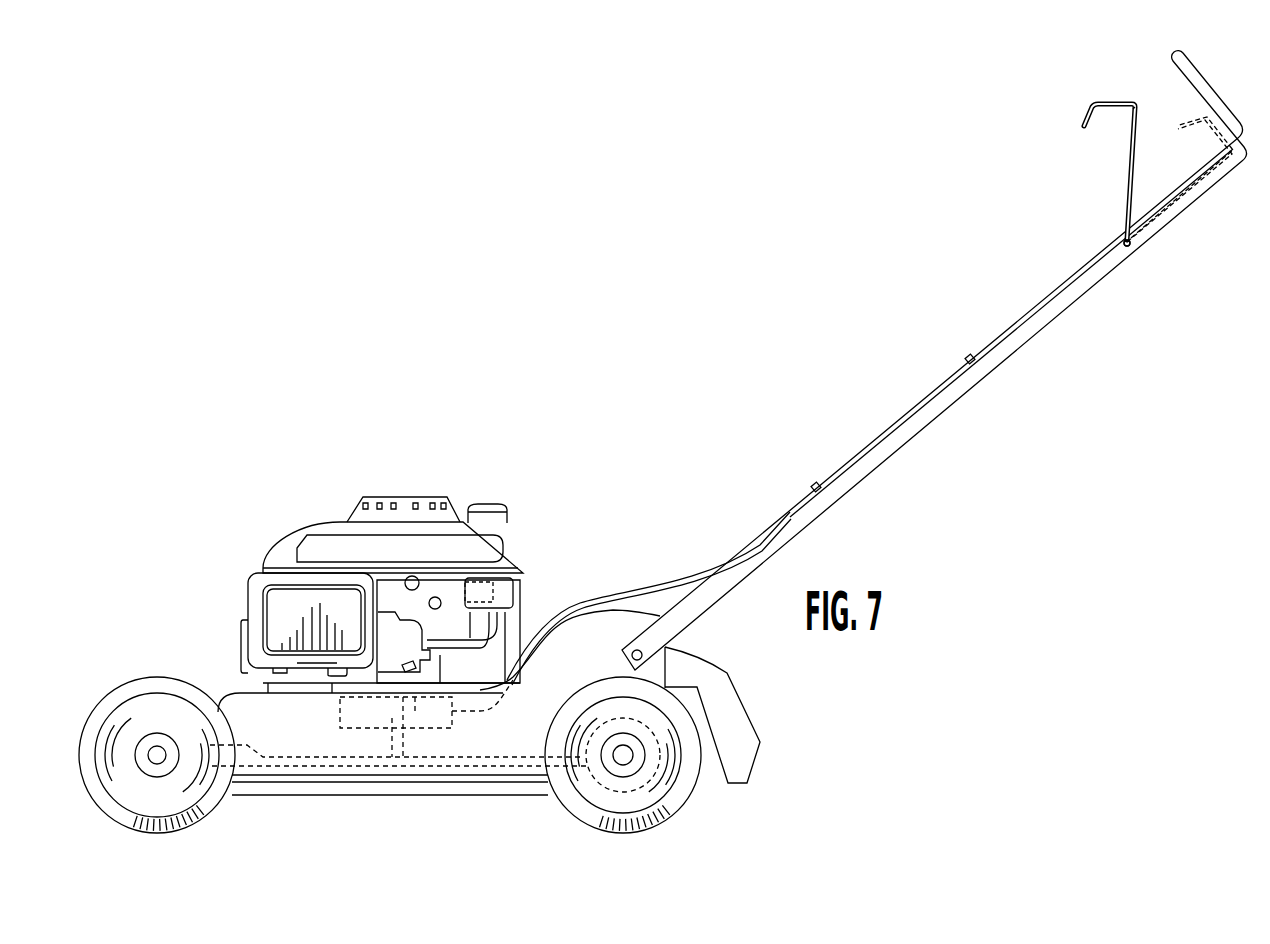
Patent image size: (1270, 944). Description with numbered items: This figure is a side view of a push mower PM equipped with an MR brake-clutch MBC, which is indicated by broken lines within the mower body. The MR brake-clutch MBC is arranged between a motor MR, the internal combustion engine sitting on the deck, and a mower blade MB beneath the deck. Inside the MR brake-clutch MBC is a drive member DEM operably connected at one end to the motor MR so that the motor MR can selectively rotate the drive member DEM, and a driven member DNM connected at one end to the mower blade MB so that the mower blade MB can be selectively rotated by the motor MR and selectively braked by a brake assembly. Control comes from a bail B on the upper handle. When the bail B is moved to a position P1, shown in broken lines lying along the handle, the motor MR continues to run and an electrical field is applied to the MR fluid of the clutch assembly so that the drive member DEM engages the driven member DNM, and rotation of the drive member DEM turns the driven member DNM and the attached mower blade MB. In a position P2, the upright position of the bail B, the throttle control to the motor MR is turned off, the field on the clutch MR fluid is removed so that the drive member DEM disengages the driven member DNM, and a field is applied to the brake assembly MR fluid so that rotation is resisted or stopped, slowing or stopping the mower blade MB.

The push mower PM is at (328, 435).
The motor MR is at (248, 590).
The mower blade MB is at (277, 767).
The MR brake-clutch MBC is at (341, 707).
The drive member DEM is at (417, 707).
The driven member DNM is at (407, 745).
The bail B is at (1098, 101).
The position P1 is at (1192, 120).
The position P2 is at (1120, 103).